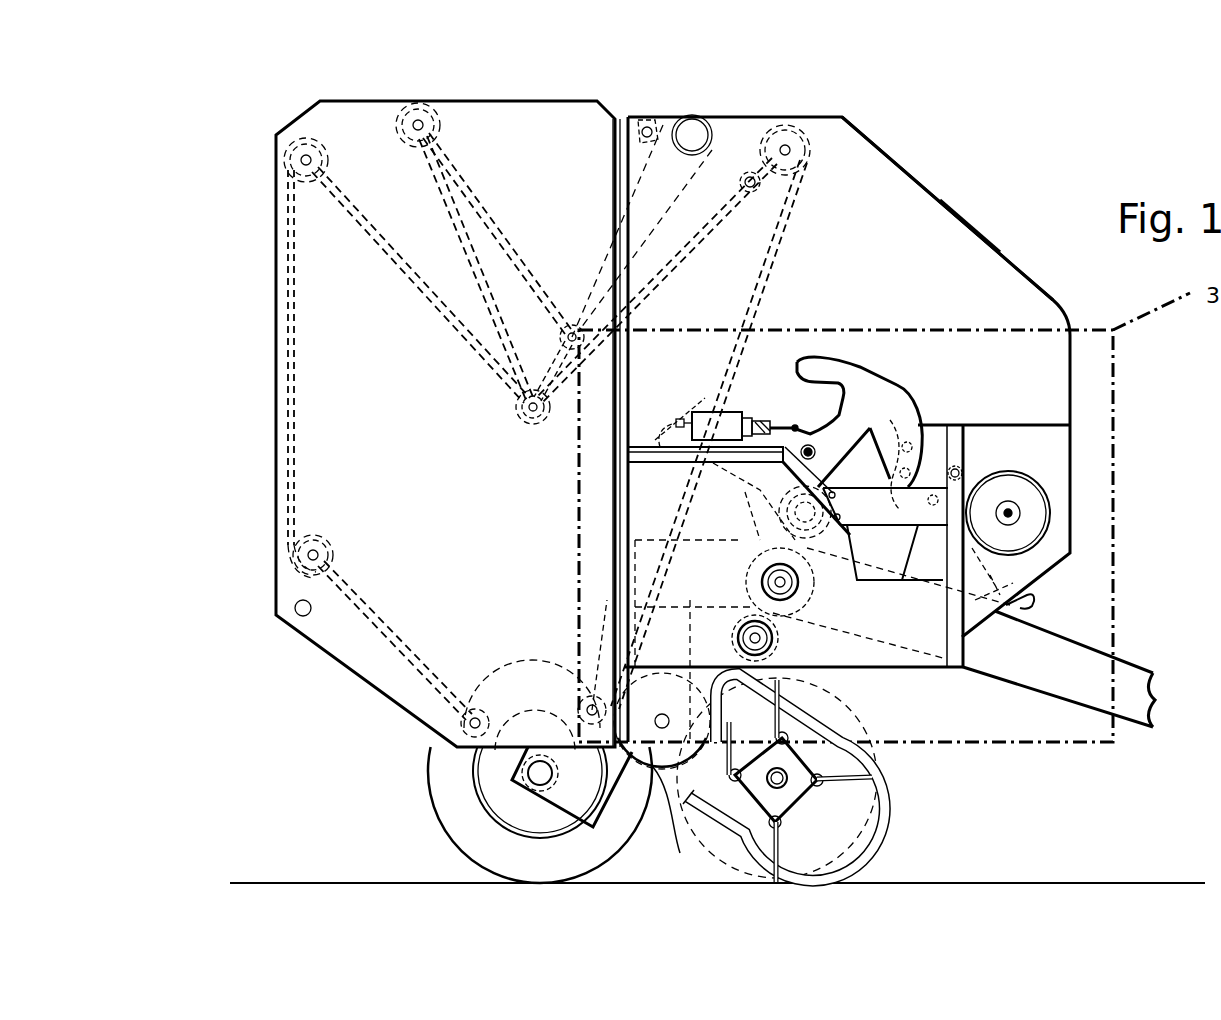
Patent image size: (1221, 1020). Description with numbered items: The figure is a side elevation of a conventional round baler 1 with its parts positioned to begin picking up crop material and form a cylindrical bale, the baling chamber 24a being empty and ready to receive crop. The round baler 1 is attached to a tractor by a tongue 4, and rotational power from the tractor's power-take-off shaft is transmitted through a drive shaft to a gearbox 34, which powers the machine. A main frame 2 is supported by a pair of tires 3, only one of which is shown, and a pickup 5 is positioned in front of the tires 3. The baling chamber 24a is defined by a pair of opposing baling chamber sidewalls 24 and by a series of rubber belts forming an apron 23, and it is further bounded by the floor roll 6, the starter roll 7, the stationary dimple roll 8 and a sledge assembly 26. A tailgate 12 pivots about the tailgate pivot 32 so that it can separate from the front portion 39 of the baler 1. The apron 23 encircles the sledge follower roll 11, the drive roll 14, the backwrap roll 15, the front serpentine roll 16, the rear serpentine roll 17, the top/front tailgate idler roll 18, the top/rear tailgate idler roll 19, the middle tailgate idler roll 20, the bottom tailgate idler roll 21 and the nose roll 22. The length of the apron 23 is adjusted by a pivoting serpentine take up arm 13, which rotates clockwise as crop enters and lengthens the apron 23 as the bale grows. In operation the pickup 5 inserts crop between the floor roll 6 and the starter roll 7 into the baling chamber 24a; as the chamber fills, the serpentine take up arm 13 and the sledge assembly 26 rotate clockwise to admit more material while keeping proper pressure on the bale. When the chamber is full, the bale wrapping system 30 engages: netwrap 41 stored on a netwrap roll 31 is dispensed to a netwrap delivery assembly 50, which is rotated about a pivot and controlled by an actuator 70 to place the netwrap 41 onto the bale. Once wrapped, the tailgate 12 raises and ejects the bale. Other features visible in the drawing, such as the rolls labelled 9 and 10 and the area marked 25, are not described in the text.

The round baler 1 is at (1045, 152).
The main frame 2 is at (1040, 291).
The tires 3 is at (435, 825).
The tongue 4 is at (1133, 665).
The pickup 5 is at (924, 795).
The floor roll 6 is at (665, 770).
The starter roll 7 is at (775, 640).
The stationary dimple roll 8 is at (812, 600).
The roller 9 is at (770, 500).
The bale forming chamber floor 10 is at (717, 477).
The sledge follower roll 11 is at (667, 427).
The tailgate 12 is at (276, 374).
The serpentine take up arm 13 is at (607, 253).
The drive roll 14 is at (786, 148).
The backwrap roll 15 is at (747, 184).
The front serpentine roll 16 is at (572, 325).
The rear serpentine roll 17 is at (530, 420).
The top/front tailgate idler roll 18 is at (418, 120).
The top/rear tailgate idler roll 19 is at (306, 160).
The middle tailgate idler roll 20 is at (318, 555).
The bottom tailgate idler roll 21 is at (470, 705).
The nose roll 22 is at (580, 697).
The apron 23 is at (292, 457).
The baling chamber sidewalls 24 is at (535, 466).
The baling chamber 24a is at (590, 522).
The bale forming chamber 25 is at (322, 309).
The sledge assembly 26 is at (767, 393).
The bale wrapping system 30 is at (1060, 462).
The netwrap roll 31 is at (1050, 530).
The tailgate pivot 32 is at (642, 134).
The gearbox 34 is at (918, 562).
The front portion 39 is at (980, 233).
The netwrap 41 is at (957, 470).
The netwrap delivery assembly 50 is at (880, 385).
The actuator 70 is at (708, 420).